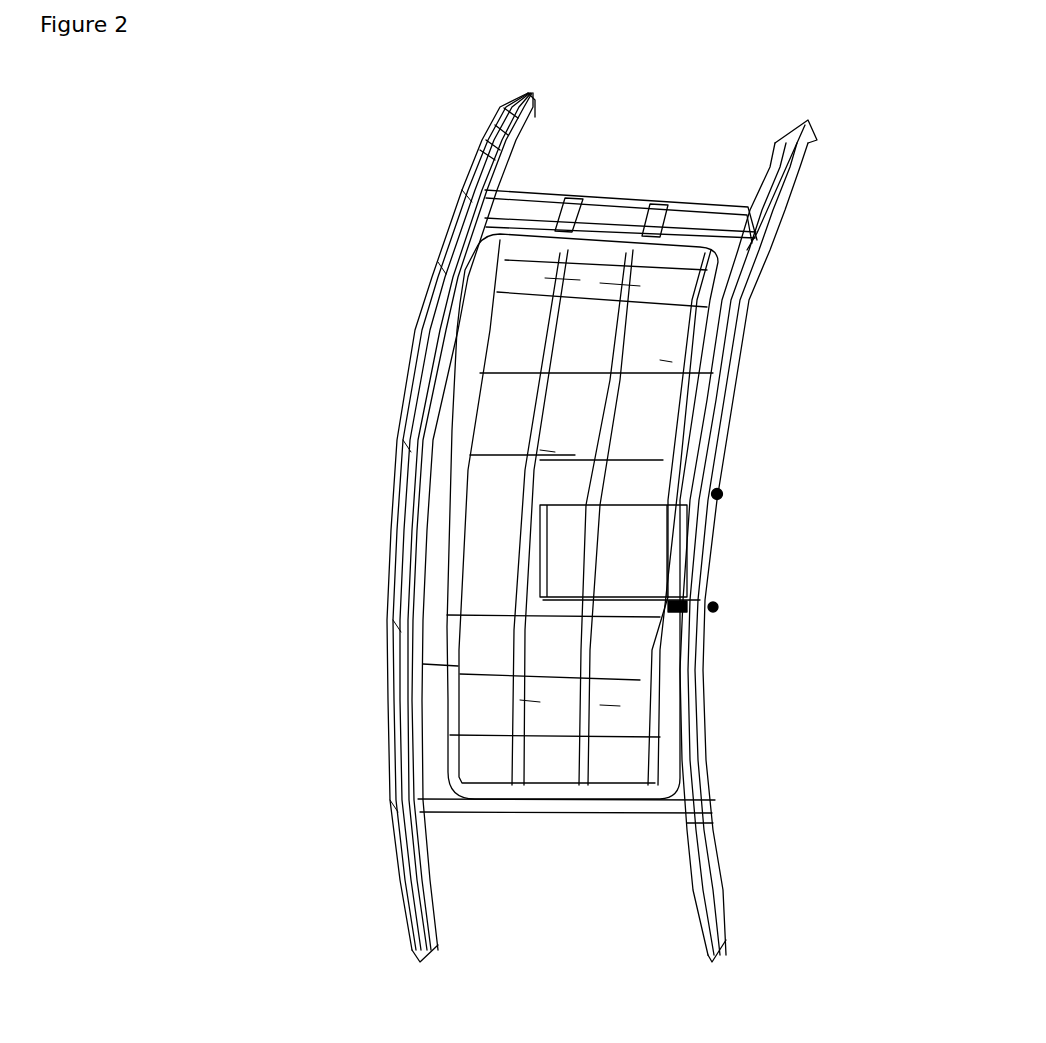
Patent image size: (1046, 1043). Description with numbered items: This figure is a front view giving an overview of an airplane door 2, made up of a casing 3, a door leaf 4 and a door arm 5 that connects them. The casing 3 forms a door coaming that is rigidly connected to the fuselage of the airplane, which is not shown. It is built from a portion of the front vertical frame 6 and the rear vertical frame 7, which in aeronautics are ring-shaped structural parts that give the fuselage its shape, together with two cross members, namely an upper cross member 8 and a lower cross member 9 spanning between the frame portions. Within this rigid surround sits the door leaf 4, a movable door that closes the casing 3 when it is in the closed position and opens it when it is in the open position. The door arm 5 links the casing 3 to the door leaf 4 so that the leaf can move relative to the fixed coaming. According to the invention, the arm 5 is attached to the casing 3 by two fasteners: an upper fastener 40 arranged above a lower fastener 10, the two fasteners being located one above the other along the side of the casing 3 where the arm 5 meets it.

The door 2 is at (336, 194).
The casing 3 is at (140, 416).
The door leaf 4 is at (580, 690).
The door arm 5 is at (618, 550).
The front vertical frame 6 is at (715, 368).
The rear vertical frame 7 is at (393, 616).
The upper cross member 8 is at (565, 218).
The lower cross member 9 is at (523, 807).
The lower fastener 10 is at (730, 607).
The upper fastener 40 is at (734, 495).